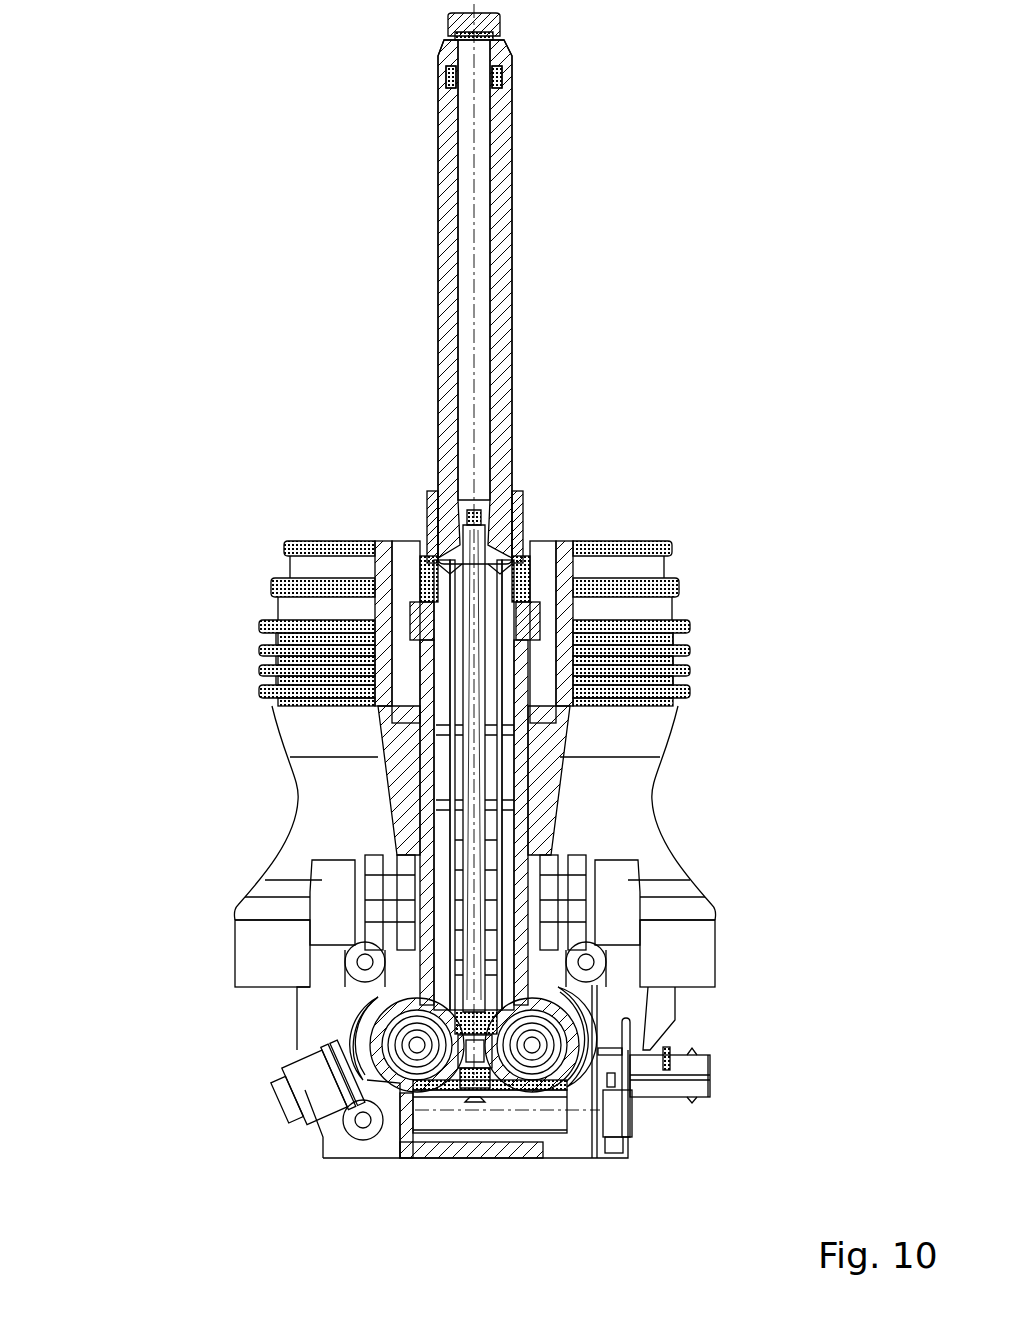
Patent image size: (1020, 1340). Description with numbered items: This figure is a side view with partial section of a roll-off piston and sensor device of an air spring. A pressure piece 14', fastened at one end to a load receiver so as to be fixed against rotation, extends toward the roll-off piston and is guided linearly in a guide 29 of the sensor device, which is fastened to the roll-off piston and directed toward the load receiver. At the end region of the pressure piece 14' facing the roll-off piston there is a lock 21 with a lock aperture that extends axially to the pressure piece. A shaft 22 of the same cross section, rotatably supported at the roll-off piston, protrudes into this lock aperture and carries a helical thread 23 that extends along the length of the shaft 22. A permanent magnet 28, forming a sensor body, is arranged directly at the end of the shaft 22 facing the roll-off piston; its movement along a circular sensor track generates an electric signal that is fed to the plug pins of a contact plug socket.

The pressure piece 14' is at (684, 288).
The lock 21 is at (445, 560).
The guide 29 is at (520, 530).
The shaft 22 is at (477, 590).
The helical thread 23 is at (478, 830).
The permanent magnet 28 is at (472, 1100).